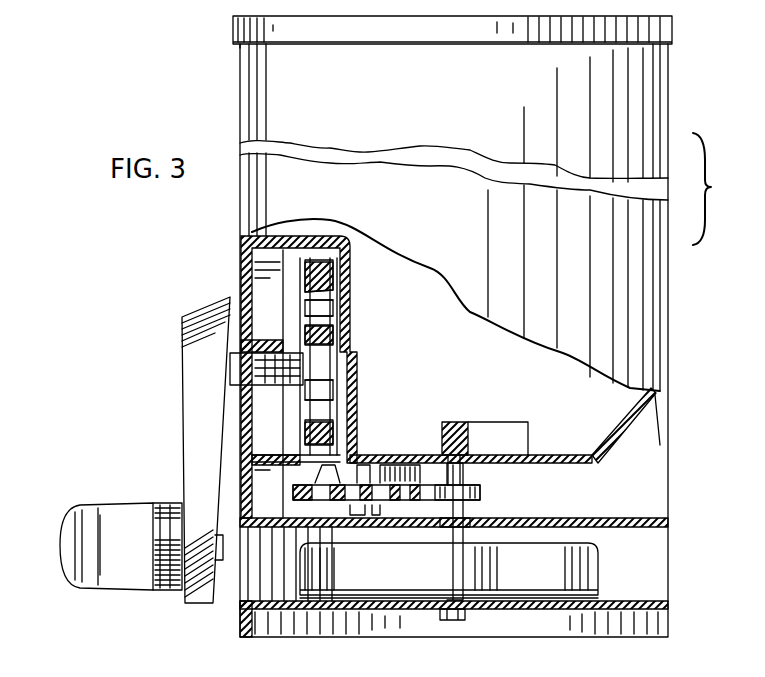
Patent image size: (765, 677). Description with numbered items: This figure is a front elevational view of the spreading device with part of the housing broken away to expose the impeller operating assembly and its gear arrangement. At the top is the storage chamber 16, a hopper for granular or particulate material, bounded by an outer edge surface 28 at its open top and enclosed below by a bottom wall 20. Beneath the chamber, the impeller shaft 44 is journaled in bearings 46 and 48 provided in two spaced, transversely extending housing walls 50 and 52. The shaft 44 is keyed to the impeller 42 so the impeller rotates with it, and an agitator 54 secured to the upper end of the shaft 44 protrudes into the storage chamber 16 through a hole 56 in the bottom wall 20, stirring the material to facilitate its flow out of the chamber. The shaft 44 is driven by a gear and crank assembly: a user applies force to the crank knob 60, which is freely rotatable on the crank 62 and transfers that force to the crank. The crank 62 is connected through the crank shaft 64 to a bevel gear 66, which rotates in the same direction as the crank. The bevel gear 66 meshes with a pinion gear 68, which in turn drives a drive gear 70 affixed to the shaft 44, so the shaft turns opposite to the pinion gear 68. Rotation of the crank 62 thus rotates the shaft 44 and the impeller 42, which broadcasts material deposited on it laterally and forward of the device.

The storage chamber 16 is at (488, 378).
The bottom wall 20 is at (563, 455).
The outer edge surface 28 is at (240, 14).
The impeller 42 is at (595, 562).
The impeller shaft 44 is at (465, 520).
The bearing 46 is at (444, 527).
The bearing 48 is at (444, 620).
The housing wall 50 is at (600, 518).
The housing wall 52 is at (626, 602).
The agitator 54 is at (440, 425).
The hole 56 is at (432, 455).
The crank knob 60 is at (128, 503).
The crank 62 is at (190, 402).
The crank shaft 64 is at (276, 370).
The bevel gear 66 is at (328, 326).
The pinion gear 68 is at (327, 502).
The drive gear 70 is at (472, 494).